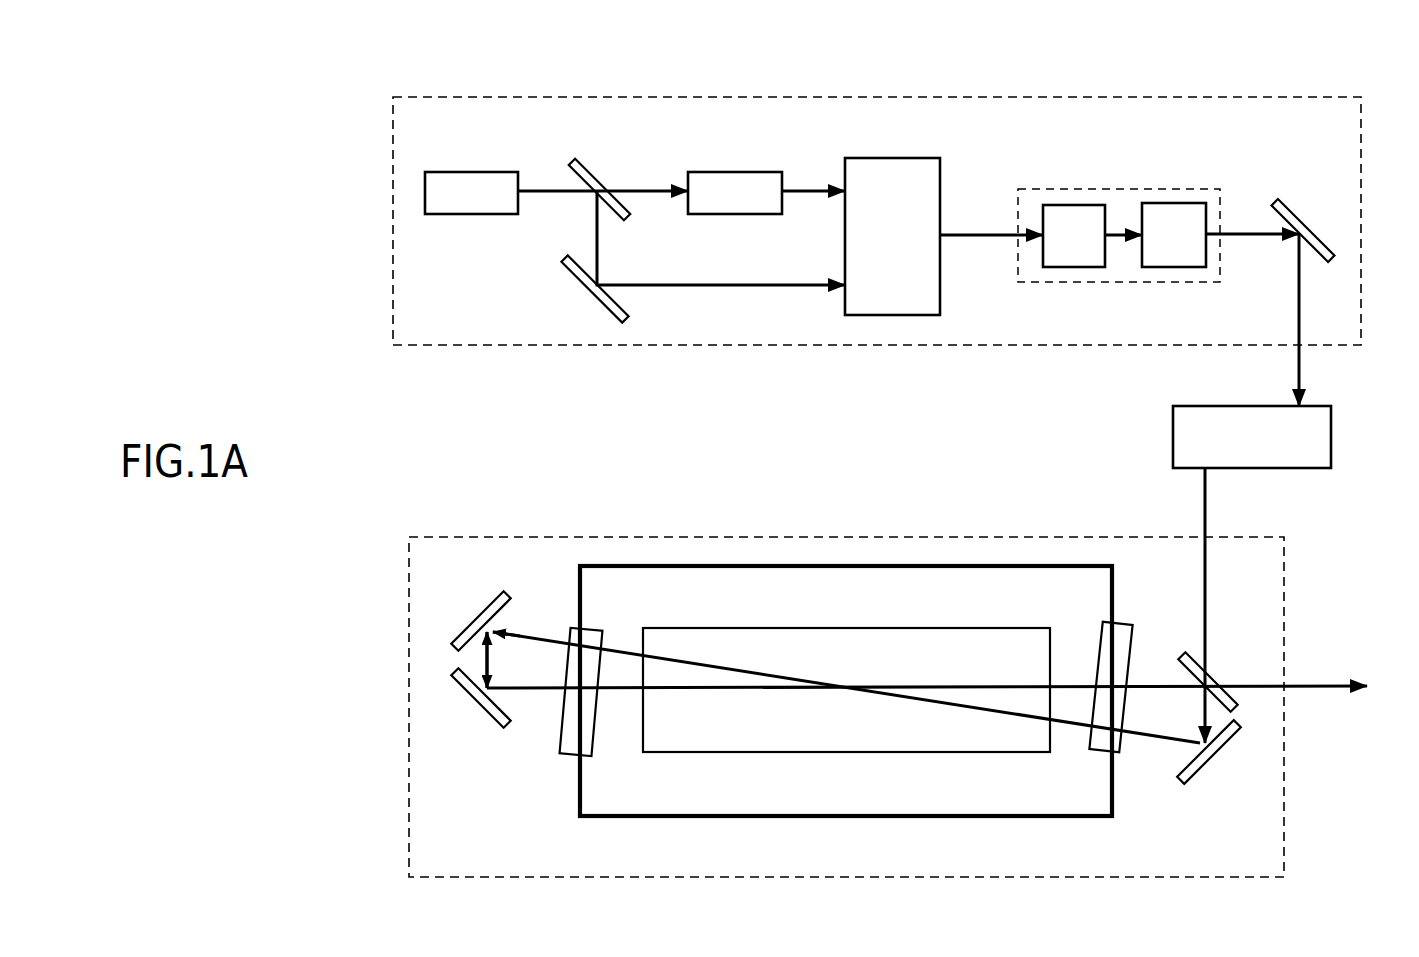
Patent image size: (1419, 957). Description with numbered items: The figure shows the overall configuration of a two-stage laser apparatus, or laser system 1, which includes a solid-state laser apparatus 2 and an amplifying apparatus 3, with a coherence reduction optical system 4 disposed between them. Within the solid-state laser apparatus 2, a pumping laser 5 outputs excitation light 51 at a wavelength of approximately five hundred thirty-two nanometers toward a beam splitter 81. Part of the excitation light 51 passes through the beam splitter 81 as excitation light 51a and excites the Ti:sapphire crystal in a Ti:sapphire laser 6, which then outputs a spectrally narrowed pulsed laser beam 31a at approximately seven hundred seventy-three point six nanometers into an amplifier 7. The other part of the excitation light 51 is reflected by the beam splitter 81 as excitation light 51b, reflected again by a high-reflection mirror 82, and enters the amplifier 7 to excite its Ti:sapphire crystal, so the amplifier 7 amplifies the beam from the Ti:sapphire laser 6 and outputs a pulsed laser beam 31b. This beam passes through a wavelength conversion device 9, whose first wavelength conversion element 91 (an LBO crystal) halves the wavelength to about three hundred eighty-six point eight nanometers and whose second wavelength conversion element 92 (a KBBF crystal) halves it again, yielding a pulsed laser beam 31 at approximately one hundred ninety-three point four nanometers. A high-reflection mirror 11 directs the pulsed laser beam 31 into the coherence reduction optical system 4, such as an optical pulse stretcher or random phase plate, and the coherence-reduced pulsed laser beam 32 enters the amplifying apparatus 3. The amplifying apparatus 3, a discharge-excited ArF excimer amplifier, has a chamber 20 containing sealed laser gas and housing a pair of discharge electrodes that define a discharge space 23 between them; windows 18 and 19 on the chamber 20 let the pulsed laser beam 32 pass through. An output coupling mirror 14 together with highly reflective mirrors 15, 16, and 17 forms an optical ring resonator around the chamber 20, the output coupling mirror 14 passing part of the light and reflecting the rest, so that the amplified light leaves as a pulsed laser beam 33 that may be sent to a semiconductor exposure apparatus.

The two-stage laser apparatus 1 is at (579, 60).
The solid-state laser apparatus 2 is at (1272, 95).
The amplifying apparatus 3 is at (522, 537).
The coherence reduction optical system 4 is at (1331, 437).
The pumping laser 5 is at (470, 172).
The Ti:sapphire laser 6 is at (727, 172).
The amplifier 7 is at (893, 158).
The wavelength conversion device 9 is at (1127, 189).
The high-reflection mirror 11 is at (1304, 210).
The output coupling mirror 14 is at (1221, 671).
The highly reflective mirror 15 is at (1210, 774).
The highly reflective mirror 16 is at (486, 608).
The highly reflective mirror 17 is at (483, 717).
The window 18 is at (1135, 630).
The window 19 is at (564, 760).
The chamber 20 is at (843, 817).
The discharge space 23 is at (925, 719).
The pulsed laser beam 31 is at (1253, 234).
The pulsed laser beam 31a is at (813, 191).
The pulsed laser beam 31b is at (982, 234).
The pulsed laser beam 32 is at (1205, 501).
The pulsed laser beam 33 is at (1315, 684).
The excitation light 51 is at (542, 191).
The excitation light 51a is at (647, 191).
The excitation light 51b is at (597, 246).
The beam splitter 81 is at (589, 168).
The high-reflection mirror 82 is at (583, 290).
The first wavelength conversion element 91 is at (1068, 205).
The second wavelength conversion element 92 is at (1181, 203).